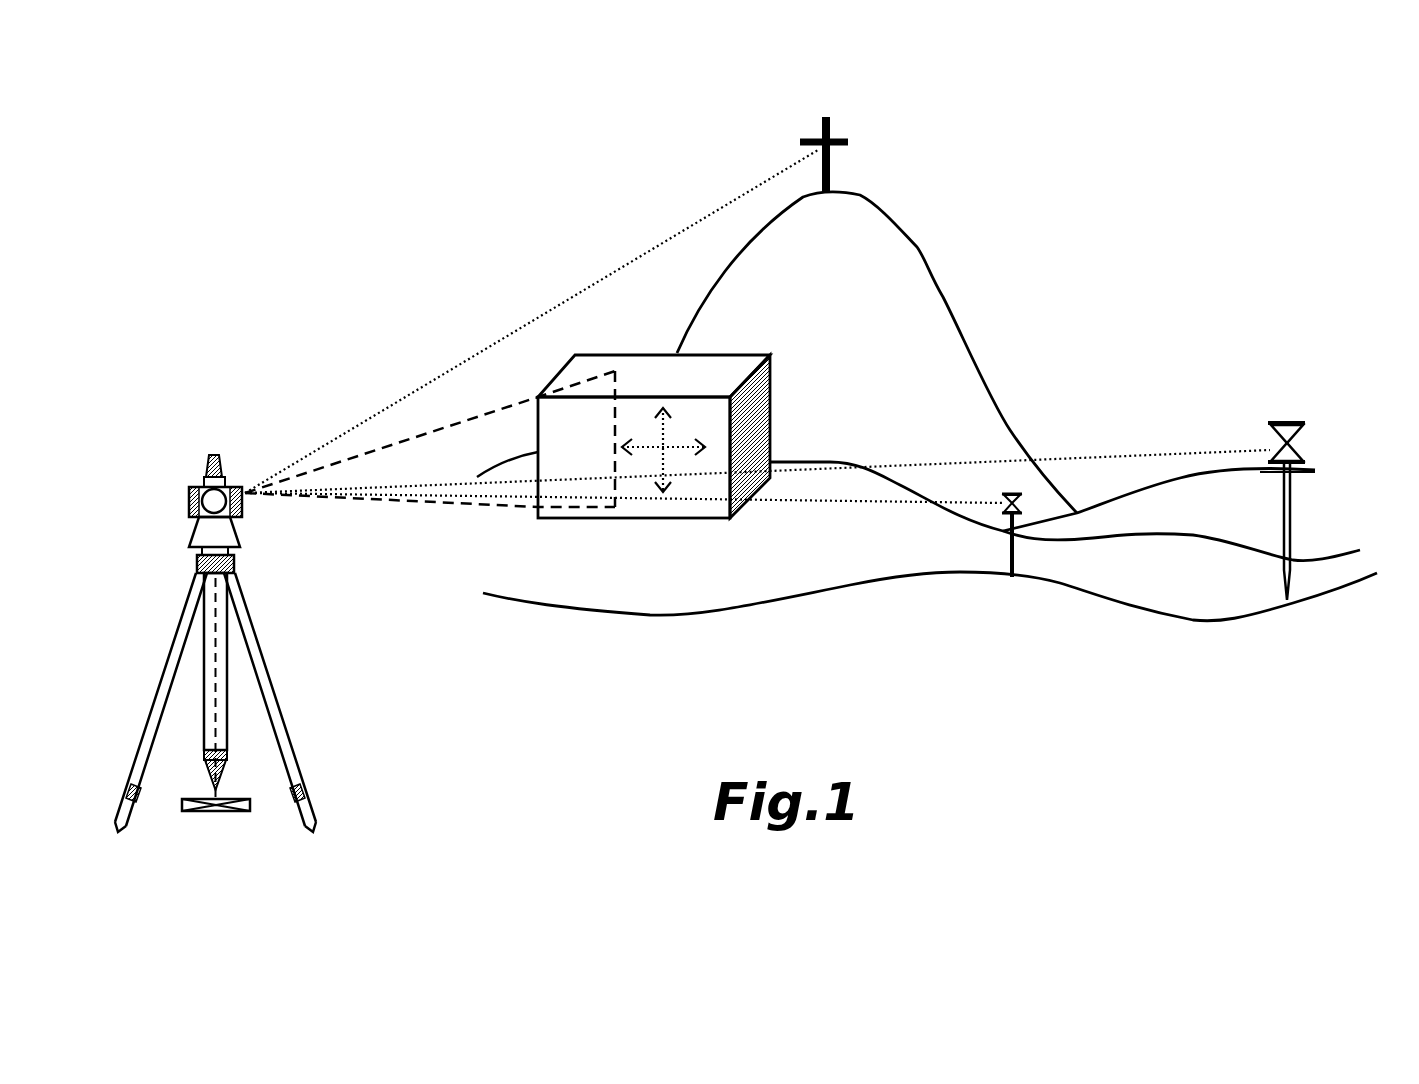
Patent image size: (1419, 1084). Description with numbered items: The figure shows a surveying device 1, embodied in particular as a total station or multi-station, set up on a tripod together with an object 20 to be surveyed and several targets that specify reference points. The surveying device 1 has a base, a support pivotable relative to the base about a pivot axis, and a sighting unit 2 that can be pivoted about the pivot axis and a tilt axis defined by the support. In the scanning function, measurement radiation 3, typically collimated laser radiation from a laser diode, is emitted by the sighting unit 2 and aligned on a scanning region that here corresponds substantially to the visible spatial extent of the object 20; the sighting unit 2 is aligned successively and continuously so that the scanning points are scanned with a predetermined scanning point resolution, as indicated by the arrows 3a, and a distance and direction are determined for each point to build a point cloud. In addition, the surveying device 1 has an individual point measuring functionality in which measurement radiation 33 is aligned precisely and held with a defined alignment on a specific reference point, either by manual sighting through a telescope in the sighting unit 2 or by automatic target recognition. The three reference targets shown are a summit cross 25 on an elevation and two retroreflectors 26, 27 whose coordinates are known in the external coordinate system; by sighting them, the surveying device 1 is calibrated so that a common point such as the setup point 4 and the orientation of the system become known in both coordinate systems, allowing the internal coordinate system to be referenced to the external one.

The surveying device 1 is at (170, 457).
The sighting unit 2 is at (187, 502).
The measurement radiation 3 is at (510, 503).
The arrows 3a is at (663, 447).
The setup point 4 is at (213, 800).
The object 20 is at (712, 368).
The summit cross 25 is at (848, 145).
The retroreflector 26 is at (1297, 423).
The retroreflector 27 is at (1027, 533).
The measurement radiation 33 is at (600, 280).